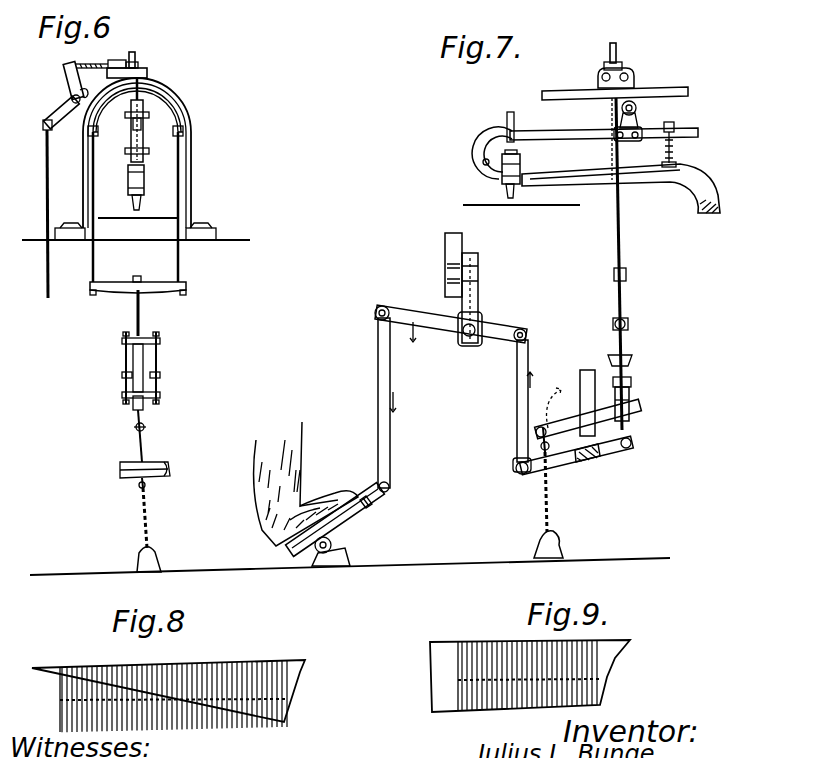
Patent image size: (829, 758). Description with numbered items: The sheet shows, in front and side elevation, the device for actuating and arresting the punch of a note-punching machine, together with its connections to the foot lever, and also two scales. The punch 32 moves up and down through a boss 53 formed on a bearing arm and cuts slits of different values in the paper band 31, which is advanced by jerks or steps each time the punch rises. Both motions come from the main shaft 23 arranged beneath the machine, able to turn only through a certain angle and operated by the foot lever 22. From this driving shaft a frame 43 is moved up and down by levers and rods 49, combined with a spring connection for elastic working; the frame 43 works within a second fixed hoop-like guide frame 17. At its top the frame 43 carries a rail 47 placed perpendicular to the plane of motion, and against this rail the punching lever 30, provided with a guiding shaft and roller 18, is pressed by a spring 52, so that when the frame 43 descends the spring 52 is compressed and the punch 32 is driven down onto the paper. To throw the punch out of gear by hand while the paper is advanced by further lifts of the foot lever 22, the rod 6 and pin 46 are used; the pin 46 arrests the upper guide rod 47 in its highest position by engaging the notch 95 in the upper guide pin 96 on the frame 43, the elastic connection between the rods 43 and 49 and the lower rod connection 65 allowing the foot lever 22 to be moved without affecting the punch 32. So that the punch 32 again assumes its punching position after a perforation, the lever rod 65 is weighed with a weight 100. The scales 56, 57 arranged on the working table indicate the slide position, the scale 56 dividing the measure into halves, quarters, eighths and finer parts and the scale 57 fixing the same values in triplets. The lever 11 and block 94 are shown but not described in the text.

In FIG. 6, the rod 6 is at (46, 170).
In FIG. 6, the lever 11 is at (70, 86).
In FIG. 6, the hoop-like guide frame 17 is at (189, 110).
In FIG. 6, the guiding shaft and roller 18 is at (141, 124).
In FIG. 7, the guiding shaft and roller 18 is at (636, 107).
In FIG. 7, the foot lever 22 is at (346, 518).
In FIG. 6, the main shaft 23 is at (148, 464).
In FIG. 7, the main shaft 23 is at (597, 455).
In FIG. 6, the punching lever 30 is at (130, 160).
In FIG. 7, the punching lever 30 is at (530, 135).
In FIG. 6, the paper band 31 is at (168, 221).
In FIG. 7, the paper band 31 is at (556, 206).
In FIG. 6, the punch 32 is at (141, 206).
In FIG. 7, the punch 32 is at (514, 193).
In FIG. 6, the frame 43 is at (181, 134).
In FIG. 7, the frame 43 is at (620, 208).
In FIG. 6, the pin 46 is at (134, 60).
In FIG. 6, the rail 47 is at (145, 101).
In FIG. 7, the rail 47 is at (642, 91).
In FIG. 6, the levers and rods 49 is at (158, 362).
In FIG. 7, the levers and rods 49 is at (625, 298).
In FIG. 7, the spring 52 is at (674, 158).
In FIG. 6, the boss 53 is at (145, 186).
In FIG. 7, the boss 53 is at (497, 172).
In FIG. 8, the scale 56 is at (166, 675).
In FIG. 9, the scale 57 is at (446, 653).
In FIG. 7, the lever rod 65 is at (387, 411).
In FIG. 6, the block 94 is at (106, 55).
In FIG. 6, the notch 95 is at (148, 75).
In FIG. 6, the upper guide pin 96 is at (138, 66).
In FIG. 6, the weight 100 is at (157, 558).
In FIG. 7, the weight 100 is at (556, 540).